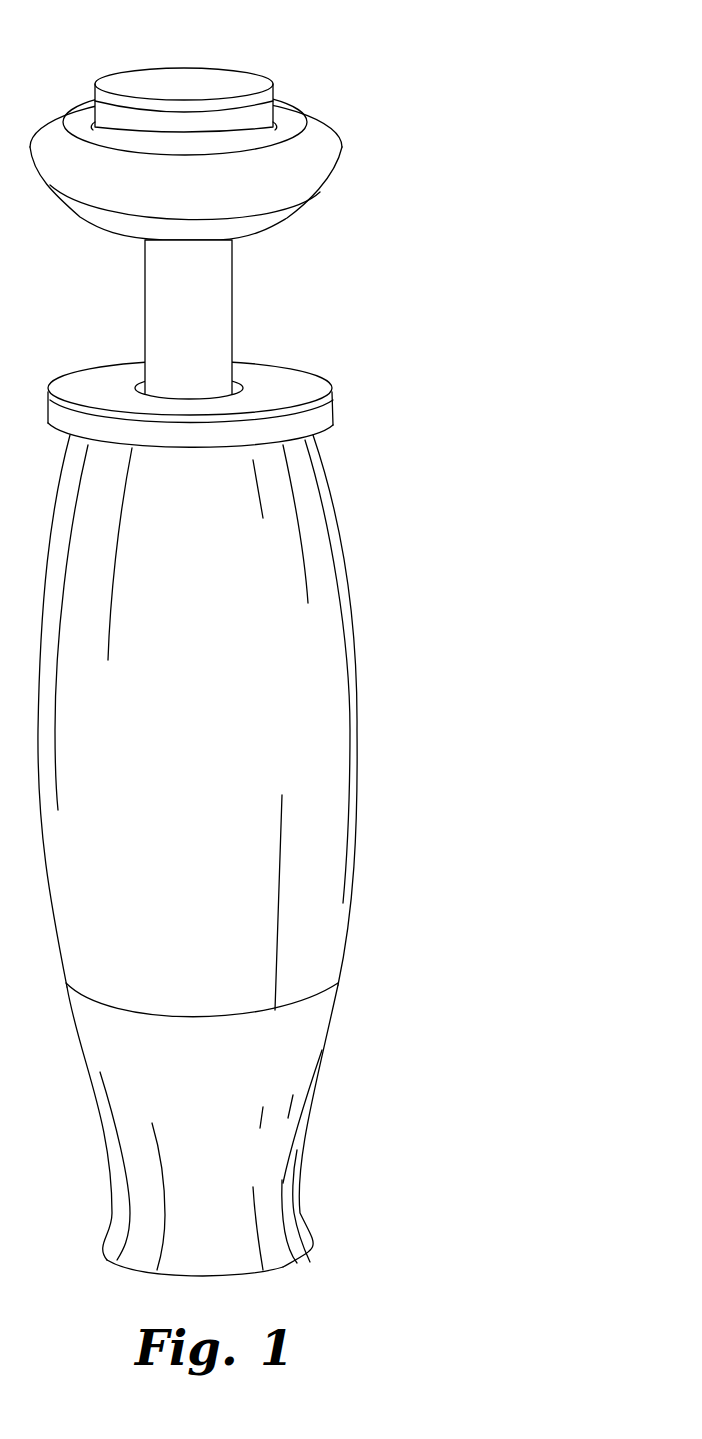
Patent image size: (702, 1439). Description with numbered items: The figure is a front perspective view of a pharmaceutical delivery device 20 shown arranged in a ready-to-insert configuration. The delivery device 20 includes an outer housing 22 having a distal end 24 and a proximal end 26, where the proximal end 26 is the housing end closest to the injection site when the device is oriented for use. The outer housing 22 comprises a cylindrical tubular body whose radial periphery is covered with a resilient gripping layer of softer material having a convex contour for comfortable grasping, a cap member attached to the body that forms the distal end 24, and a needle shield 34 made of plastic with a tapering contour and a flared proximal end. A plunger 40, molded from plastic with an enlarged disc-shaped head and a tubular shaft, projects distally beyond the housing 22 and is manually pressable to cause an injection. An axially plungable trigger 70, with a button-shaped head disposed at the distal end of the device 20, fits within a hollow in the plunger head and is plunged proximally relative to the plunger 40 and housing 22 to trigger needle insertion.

The delivery device 20 is at (470, 600).
The outer housing 22 is at (390, 787).
The distal end 24 is at (290, 382).
The proximal end 26 is at (280, 1271).
The needle shield 34 is at (135, 1106).
The plunger 40 is at (313, 220).
The trigger 70 is at (271, 59).